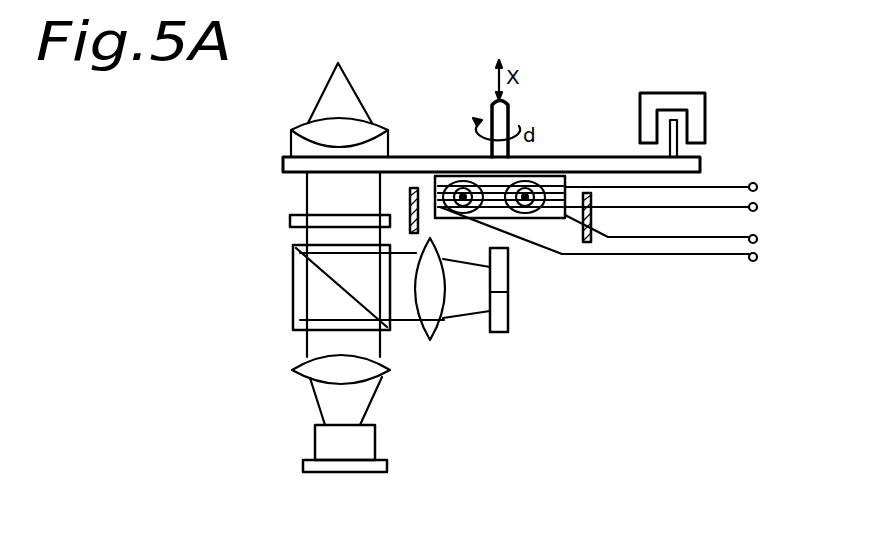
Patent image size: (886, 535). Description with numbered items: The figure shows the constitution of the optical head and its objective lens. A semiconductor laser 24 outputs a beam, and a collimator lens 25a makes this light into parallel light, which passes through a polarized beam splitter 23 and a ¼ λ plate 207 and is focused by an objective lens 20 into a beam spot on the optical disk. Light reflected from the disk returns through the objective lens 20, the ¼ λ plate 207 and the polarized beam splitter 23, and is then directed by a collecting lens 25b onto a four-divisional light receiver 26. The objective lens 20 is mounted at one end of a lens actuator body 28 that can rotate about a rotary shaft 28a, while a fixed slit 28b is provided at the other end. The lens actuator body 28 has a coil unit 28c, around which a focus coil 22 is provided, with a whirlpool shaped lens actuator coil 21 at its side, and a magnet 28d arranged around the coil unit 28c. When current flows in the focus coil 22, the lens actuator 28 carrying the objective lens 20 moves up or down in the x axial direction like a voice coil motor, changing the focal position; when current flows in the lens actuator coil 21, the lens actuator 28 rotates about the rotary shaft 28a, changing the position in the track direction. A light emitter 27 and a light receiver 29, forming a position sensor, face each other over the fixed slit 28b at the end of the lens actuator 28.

The objective lens 20 is at (302, 131).
The lens actuator body 28 is at (427, 157).
The rotary shaft 28a is at (510, 112).
The fixed slit 28b is at (678, 148).
The coil unit 28c is at (513, 220).
The magnet 28d is at (590, 243).
The focus coil 22 is at (555, 177).
The lens actuator coil 21 is at (540, 250).
The light emitter 27 is at (680, 101).
The light receiver 29 is at (672, 93).
The ¼ λ plate 207 is at (290, 221).
The polarized beam splitter 23 is at (296, 320).
The collimator lens 25a is at (307, 371).
The collecting lens 25b is at (432, 340).
The four-divisional light receiver 26 is at (500, 329).
The semiconductor laser 24 is at (325, 445).